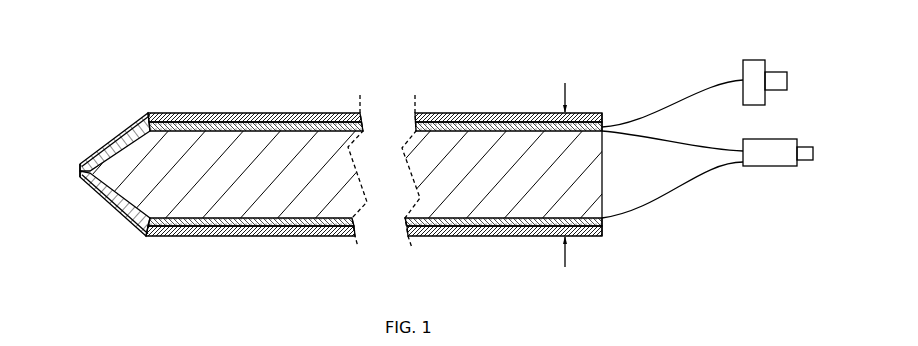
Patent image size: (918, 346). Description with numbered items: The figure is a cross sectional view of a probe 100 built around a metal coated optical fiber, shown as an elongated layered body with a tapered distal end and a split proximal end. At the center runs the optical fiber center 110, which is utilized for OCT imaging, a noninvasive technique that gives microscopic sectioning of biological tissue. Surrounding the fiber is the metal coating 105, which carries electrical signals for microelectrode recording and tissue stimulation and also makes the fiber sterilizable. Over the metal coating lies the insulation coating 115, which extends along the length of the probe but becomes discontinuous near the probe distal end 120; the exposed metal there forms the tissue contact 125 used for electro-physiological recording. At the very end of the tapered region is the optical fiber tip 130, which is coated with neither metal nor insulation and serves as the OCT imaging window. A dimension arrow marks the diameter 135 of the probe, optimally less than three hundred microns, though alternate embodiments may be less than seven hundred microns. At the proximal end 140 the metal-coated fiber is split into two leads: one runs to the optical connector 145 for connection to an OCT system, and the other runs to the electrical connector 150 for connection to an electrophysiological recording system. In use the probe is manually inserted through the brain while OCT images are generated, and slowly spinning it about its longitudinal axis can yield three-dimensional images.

The probe 100 is at (341, 59).
The metal coating 105 is at (155, 112).
The optical fiber center 110 is at (445, 155).
The insulation coating 115 is at (258, 112).
The probe distal end 120 is at (83, 185).
The tissue contact 125 is at (115, 138).
The optical fiber tip 130 is at (80, 175).
The diameter 135 is at (565, 267).
The proximal end 140 is at (602, 115).
The optical connector 145 is at (770, 167).
The electrical connector 150 is at (753, 60).